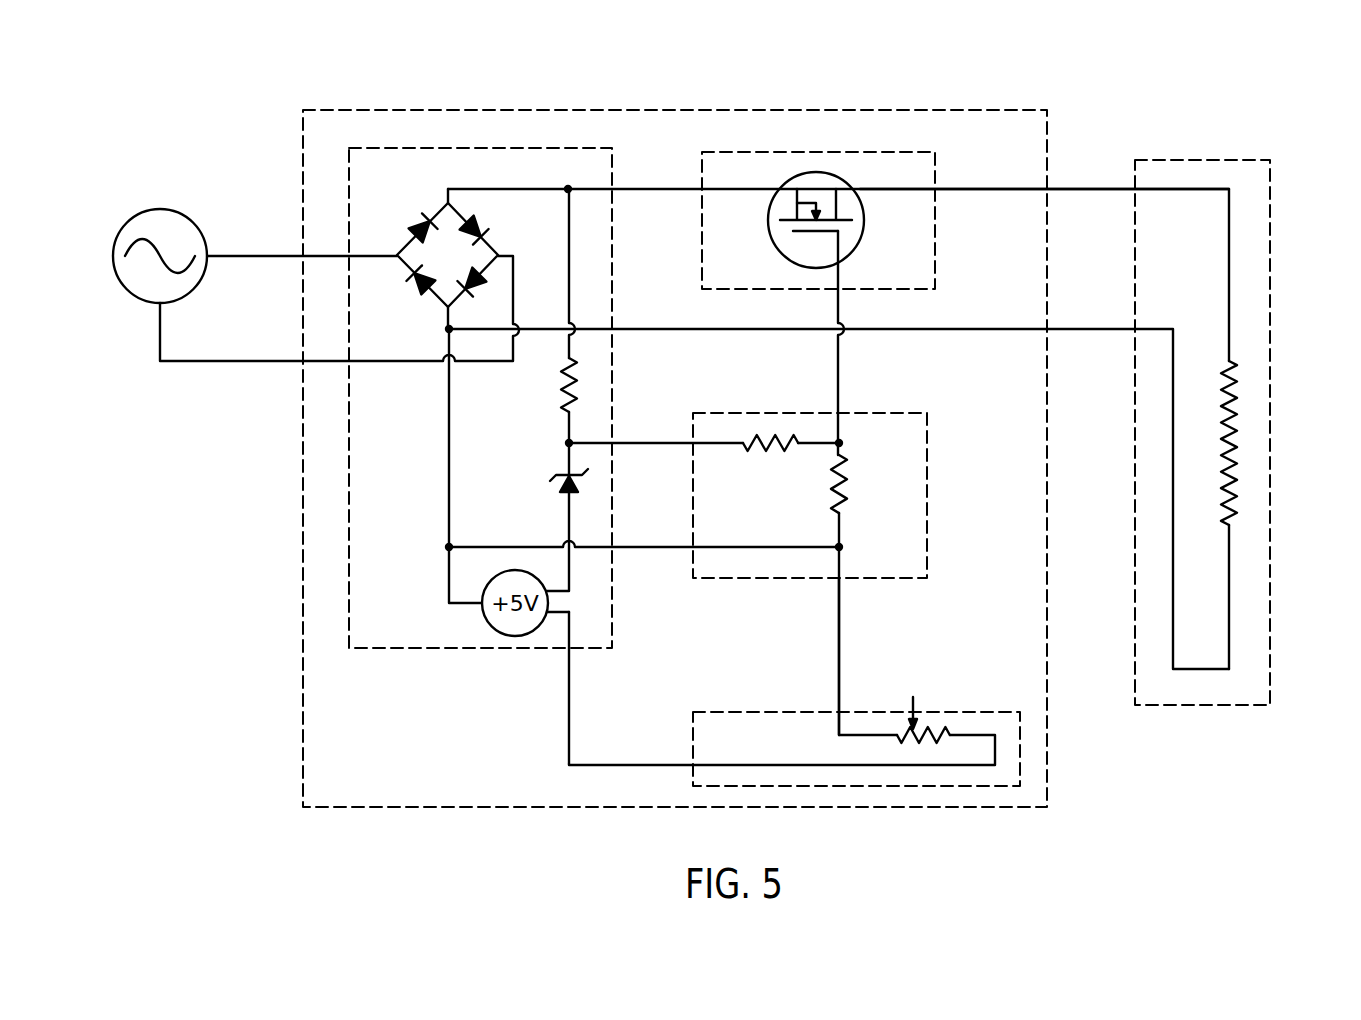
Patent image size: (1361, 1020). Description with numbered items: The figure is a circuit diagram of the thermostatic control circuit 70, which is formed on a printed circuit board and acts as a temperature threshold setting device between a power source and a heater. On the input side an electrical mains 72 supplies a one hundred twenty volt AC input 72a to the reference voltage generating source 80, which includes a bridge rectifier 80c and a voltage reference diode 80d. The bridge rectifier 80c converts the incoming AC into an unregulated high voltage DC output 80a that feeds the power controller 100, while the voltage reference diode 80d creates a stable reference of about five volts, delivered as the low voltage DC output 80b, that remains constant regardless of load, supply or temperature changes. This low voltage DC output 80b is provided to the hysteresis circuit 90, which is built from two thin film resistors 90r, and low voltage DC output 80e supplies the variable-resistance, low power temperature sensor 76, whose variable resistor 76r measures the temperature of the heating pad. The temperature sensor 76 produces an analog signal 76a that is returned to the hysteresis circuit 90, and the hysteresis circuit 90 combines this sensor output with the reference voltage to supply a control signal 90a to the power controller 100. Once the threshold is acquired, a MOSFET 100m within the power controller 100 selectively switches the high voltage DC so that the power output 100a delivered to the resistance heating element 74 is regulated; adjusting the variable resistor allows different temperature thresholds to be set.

The thermostatic control circuit 70 is at (672, 110).
The electrical mains 72 is at (148, 210).
The AC input 72a is at (232, 255).
The resistance heating element 74 is at (1233, 425).
The temperature sensor 76 is at (995, 712).
The analog signal 76a is at (840, 625).
The sense resistor 76r is at (940, 727).
The reference voltage generating source 80 is at (387, 160).
The high voltage DC output 80a is at (637, 188).
The low voltage DC output 80b is at (657, 440).
The bridge rectifier 80c is at (437, 200).
The voltage reference diode 80d is at (563, 487).
The low voltage DC output 80e is at (569, 693).
The hysteresis circuit 90 is at (810, 495).
The gate drive line 90a is at (840, 378).
The thin film resistors 90r is at (835, 492).
The power controller 100 is at (735, 152).
The power output 100a is at (980, 189).
The MOSFET 100m is at (812, 172).